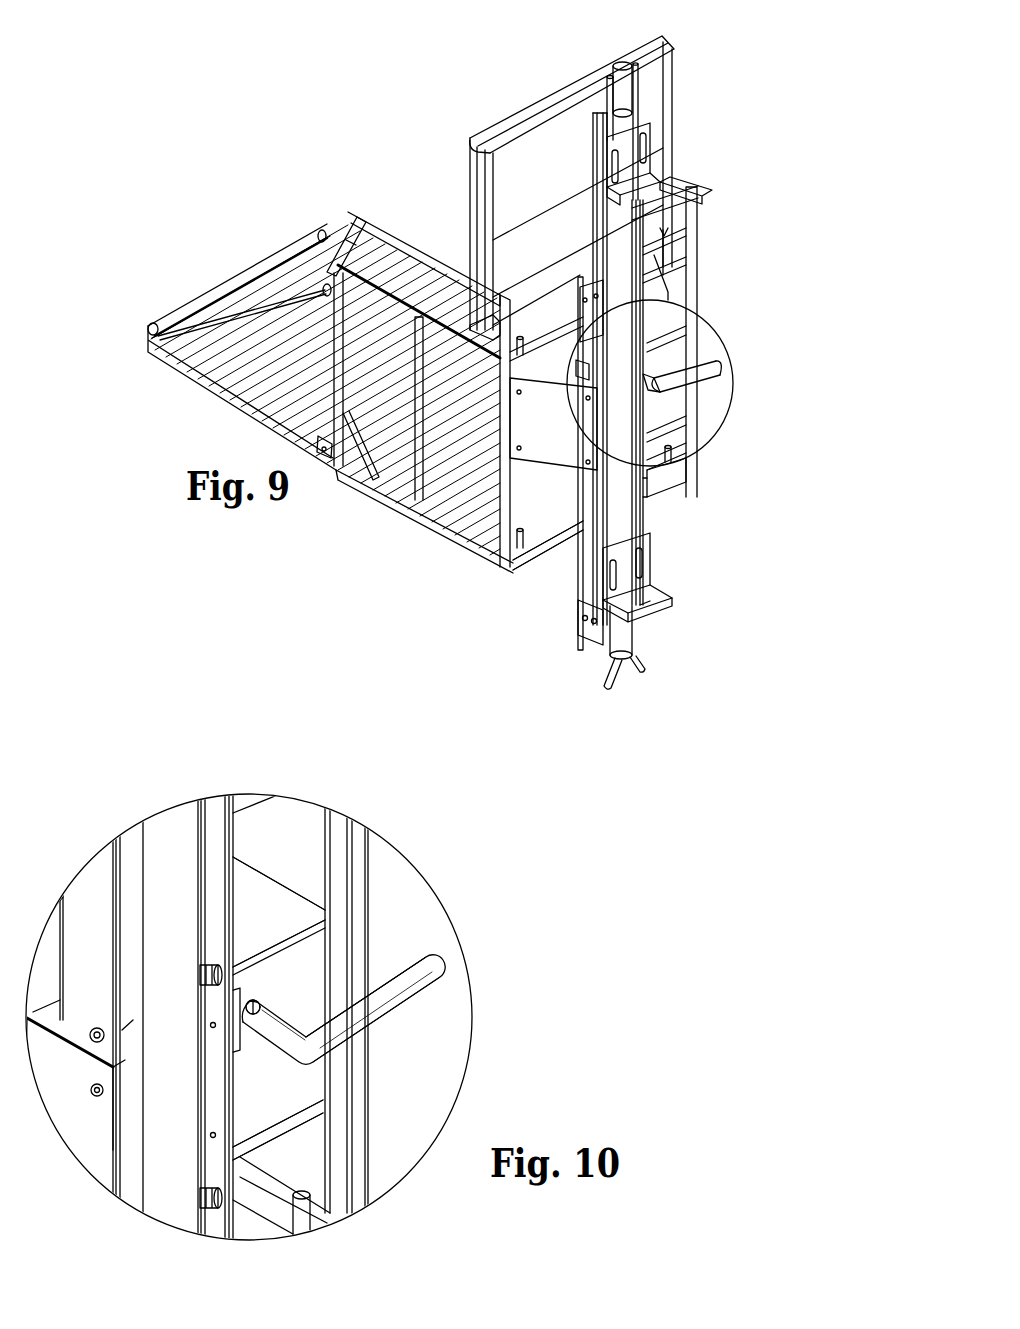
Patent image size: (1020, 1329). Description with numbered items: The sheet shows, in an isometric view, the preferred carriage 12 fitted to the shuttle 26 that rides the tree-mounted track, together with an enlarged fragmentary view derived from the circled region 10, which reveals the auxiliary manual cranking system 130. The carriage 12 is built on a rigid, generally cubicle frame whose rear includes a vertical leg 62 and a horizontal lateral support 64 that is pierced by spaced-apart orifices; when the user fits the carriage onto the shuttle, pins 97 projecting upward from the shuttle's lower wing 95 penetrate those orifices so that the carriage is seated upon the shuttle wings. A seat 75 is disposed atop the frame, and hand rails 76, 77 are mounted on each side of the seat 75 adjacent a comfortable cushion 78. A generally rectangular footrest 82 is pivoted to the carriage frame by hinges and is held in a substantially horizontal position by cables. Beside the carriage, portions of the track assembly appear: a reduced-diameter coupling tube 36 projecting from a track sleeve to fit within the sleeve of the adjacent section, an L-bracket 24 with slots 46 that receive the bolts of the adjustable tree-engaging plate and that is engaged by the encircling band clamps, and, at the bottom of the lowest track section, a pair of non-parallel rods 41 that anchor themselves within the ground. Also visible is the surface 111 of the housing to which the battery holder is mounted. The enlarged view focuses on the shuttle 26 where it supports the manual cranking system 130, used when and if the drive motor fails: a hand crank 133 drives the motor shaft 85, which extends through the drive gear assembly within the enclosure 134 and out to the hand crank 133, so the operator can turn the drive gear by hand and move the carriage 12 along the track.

In FIG. 9, the carriage 12 is at (282, 98).
In FIG. 9, the seat 75 is at (455, 130).
In FIG. 9, the cushion 78 is at (398, 212).
In FIG. 9, the hand rail 77 is at (435, 258).
In FIG. 9, the footrest 82 is at (258, 258).
In FIG. 9, the coupling tube 36 is at (624, 88).
In FIG. 9, the hand rail 76 is at (690, 176).
In FIG. 9, the vertical leg 62 is at (690, 285).
In FIG. 9, the circled region 10 is at (733, 392).
In FIG. 9, the lateral support 64 is at (660, 477).
In FIG. 9, the L-bracket 24 is at (675, 563).
In FIG. 9, the slots 46 is at (662, 596).
In FIG. 9, the rods 41 is at (615, 677).
In FIG. 9, the lower wing 95 is at (553, 560).
In FIG. 9, the pins 97 is at (543, 400).
In FIG. 9, the surface 111 is at (383, 485).
In FIG. 10, the shuttle 26 is at (236, 846).
In FIG. 10, the motor shaft 85 is at (252, 1012).
In FIG. 10, the manual cranking system 130 is at (478, 958).
In FIG. 10, the hand crank 133 is at (407, 1003).
In FIG. 10, the enclosure 134 is at (278, 1103).